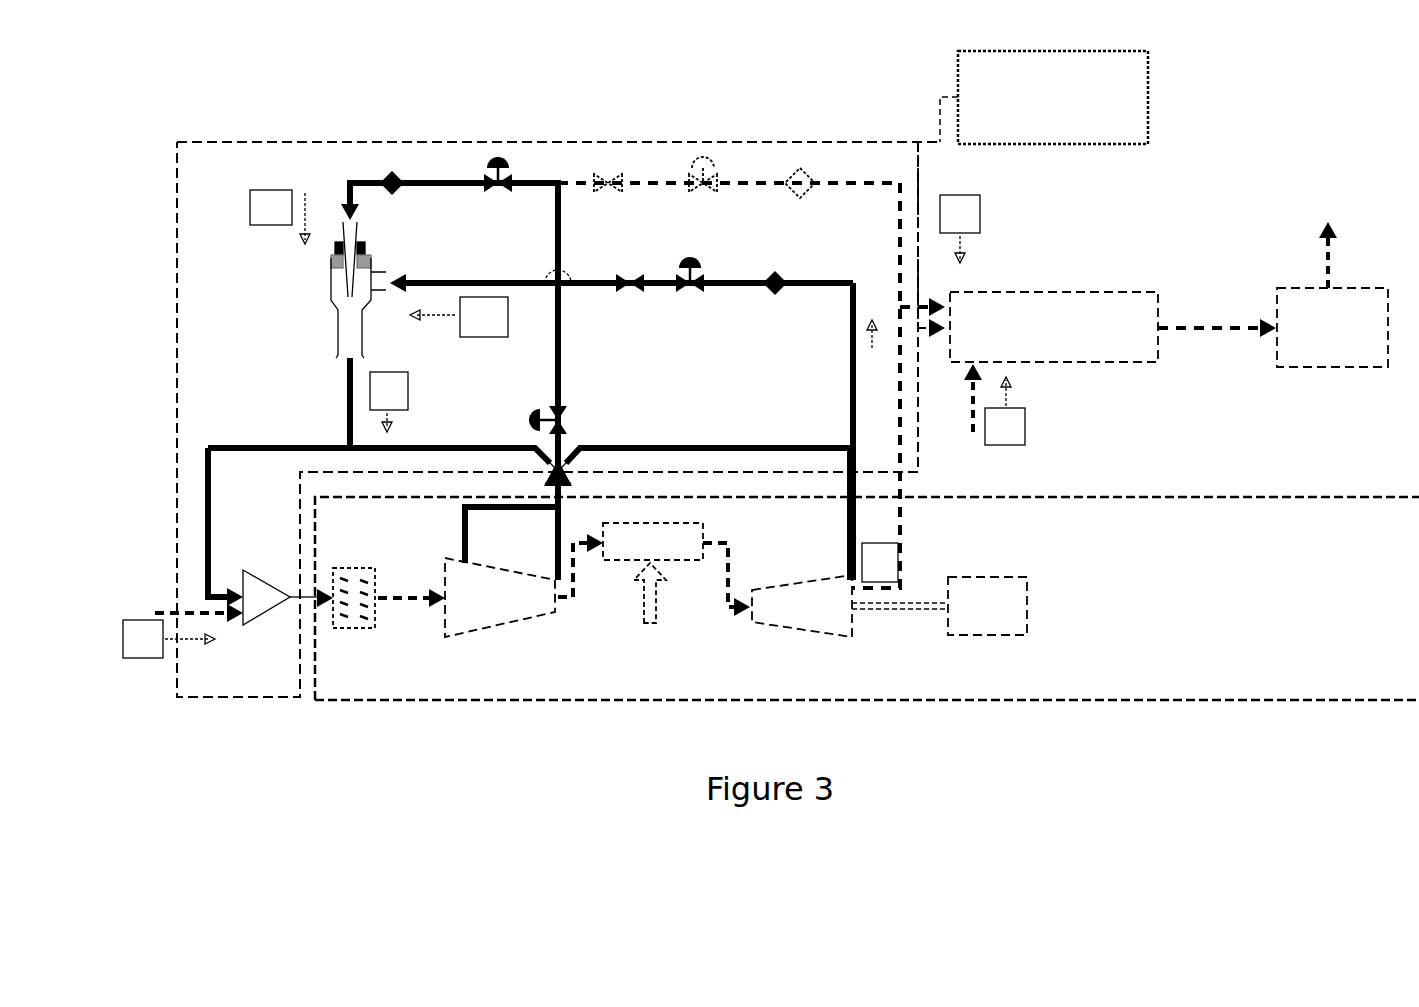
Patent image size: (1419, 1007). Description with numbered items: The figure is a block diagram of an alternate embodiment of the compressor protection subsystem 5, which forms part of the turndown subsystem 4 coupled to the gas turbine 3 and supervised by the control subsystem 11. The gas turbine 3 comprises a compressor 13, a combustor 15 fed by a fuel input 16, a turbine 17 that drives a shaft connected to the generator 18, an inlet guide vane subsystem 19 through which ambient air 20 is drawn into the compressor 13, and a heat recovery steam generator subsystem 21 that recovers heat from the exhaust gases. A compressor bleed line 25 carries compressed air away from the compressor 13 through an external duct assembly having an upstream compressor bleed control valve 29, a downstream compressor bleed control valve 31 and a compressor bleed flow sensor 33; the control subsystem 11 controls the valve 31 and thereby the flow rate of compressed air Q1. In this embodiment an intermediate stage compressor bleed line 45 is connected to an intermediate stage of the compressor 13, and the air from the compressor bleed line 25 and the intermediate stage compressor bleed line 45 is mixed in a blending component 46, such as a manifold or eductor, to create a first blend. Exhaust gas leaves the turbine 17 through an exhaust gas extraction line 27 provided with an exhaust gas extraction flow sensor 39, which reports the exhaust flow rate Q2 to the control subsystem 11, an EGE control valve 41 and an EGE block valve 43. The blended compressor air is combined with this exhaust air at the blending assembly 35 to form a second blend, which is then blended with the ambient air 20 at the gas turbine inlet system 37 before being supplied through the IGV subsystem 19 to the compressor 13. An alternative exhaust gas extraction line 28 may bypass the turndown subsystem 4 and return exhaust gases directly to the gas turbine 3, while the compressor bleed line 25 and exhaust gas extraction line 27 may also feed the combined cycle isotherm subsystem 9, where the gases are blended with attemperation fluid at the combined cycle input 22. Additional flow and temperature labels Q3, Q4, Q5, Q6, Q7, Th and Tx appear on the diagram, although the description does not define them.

The gas turbine 3 is at (352, 700).
The turndown subsystem 4 is at (388, 100).
The compressor protection subsystem 5 is at (265, 142).
The combined cycle isotherm subsystem 9 is at (1112, 292).
The control subsystem 11 is at (1148, 75).
The compressor 13 is at (500, 627).
The combustor 15 is at (685, 560).
The fuel input 16 is at (650, 623).
The turbine 17 is at (800, 630).
The generator 18 is at (988, 635).
The inlet guide vane (IGV) subsystem 19 is at (350, 568).
The ambient air 20 is at (155, 613).
The heat recovery steam generator subsystem 21 is at (1330, 367).
The combined cycle input 22 is at (973, 432).
The compressor bleed line 25 is at (553, 536).
The exhaust gas extraction line 27 is at (850, 548).
The exhaust gas extraction line 28 is at (760, 448).
The upstream compressor bleed control valve 29 is at (535, 420).
The downstream compressor bleed control valve 31 is at (503, 158).
The compressor bleed flow sensor 33 is at (392, 170).
The blending assembly 35 is at (345, 285).
The gas turbine inlet system 37 is at (255, 620).
The exhaust gas extraction (EGE) flow sensor 39 is at (775, 270).
The EGE control valve 41 is at (690, 258).
The EGE block valve 43 is at (630, 272).
The intermediate stage compressor bleed line 45 is at (493, 505).
The blending component 46 is at (570, 465).
The flow rate of the compressed air Q1 is at (280, 217).
The flow rate of exhaust gasses Q2 is at (459, 317).
The flow Q3 is at (389, 402).
The flow Q4 is at (169, 639).
The flow Q5 is at (960, 229).
The flow Q6 is at (872, 354).
The flow Q7 is at (1005, 411).
The heat temperature Th is at (1217, 313).
The temperature sensor Tx is at (880, 562).